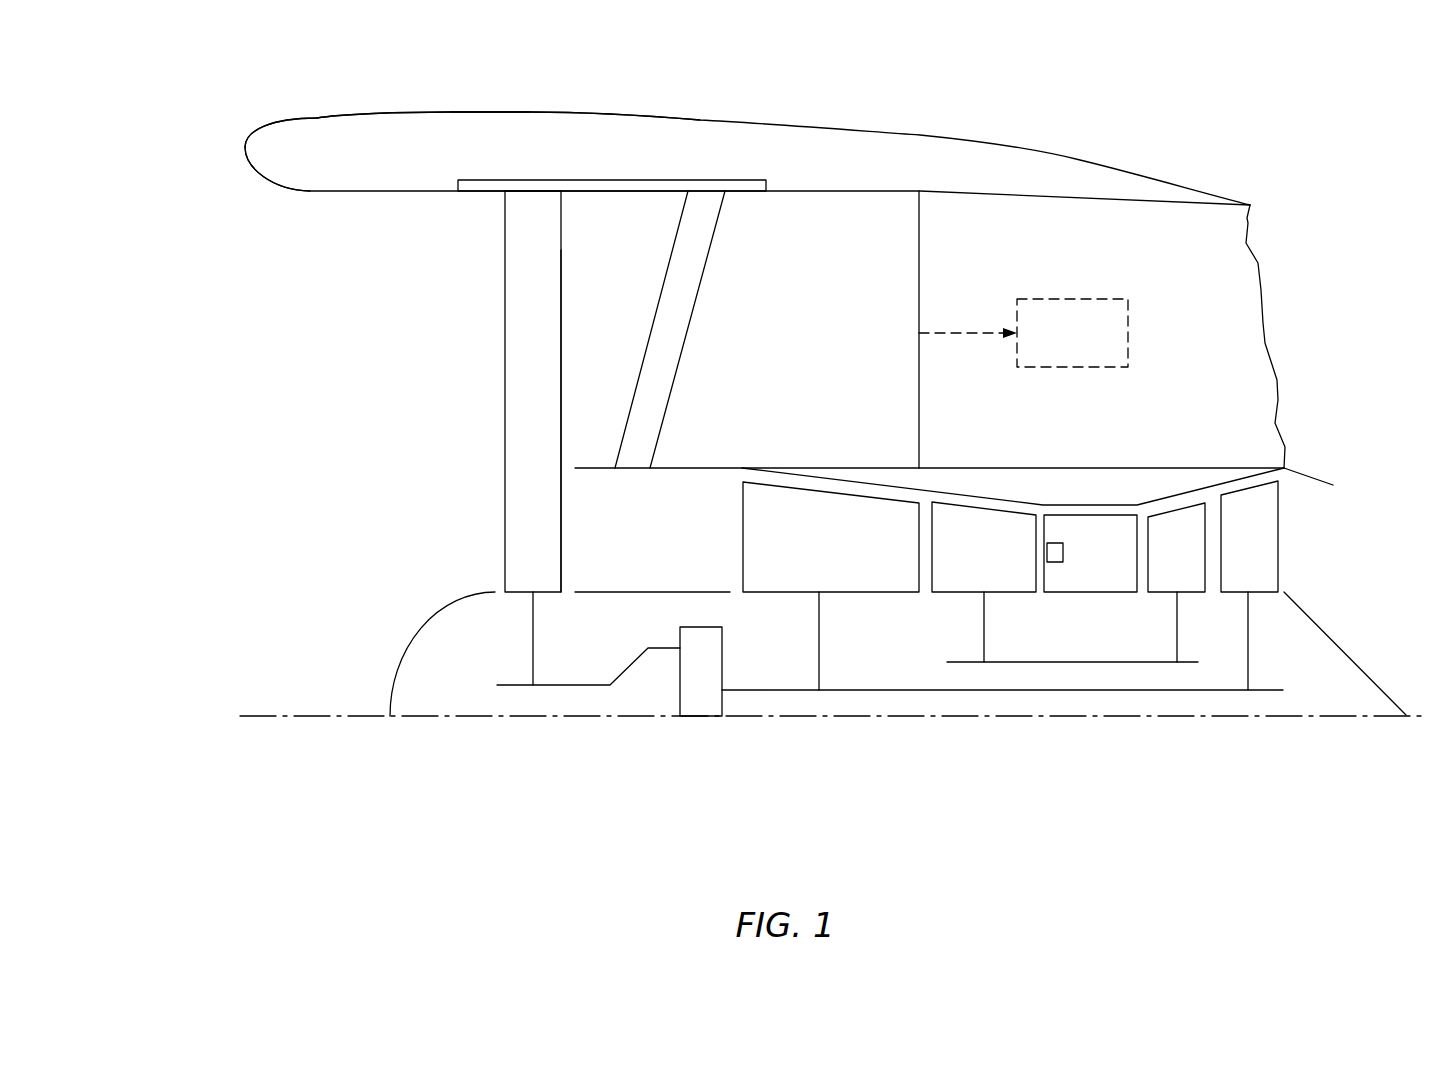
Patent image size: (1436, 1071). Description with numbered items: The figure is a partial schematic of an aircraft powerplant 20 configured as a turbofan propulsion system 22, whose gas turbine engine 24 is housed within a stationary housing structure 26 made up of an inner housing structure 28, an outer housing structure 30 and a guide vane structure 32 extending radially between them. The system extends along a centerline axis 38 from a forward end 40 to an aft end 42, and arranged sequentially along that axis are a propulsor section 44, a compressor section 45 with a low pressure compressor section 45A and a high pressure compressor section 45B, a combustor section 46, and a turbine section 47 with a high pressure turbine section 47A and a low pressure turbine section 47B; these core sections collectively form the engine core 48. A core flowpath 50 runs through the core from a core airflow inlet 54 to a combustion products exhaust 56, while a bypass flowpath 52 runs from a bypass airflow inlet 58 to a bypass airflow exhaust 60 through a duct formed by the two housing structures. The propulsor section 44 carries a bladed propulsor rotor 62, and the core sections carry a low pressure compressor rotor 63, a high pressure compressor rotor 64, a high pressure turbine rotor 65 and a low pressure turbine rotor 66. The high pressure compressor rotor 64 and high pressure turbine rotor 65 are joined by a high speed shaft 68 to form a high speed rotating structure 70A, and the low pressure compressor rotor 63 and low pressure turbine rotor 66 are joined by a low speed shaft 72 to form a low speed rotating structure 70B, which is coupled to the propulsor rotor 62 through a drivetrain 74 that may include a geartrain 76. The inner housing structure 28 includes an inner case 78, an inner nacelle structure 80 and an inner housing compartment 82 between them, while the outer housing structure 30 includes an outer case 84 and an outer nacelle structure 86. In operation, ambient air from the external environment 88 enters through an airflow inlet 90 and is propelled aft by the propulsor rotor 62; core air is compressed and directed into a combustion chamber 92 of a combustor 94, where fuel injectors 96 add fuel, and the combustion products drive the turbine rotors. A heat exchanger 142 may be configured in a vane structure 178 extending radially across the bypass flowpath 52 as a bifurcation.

The powerplant 20 is at (215, 100).
The propulsion system 22 is at (215, 100).
The gas turbine engine 24 is at (278, 261).
The housing structure 26 is at (403, 87).
The inner housing structure 28 is at (768, 450).
The outer housing structure 30 is at (460, 89).
The guide vane structure 32 is at (719, 327).
The axis 38 is at (259, 716).
The forward end 40 is at (245, 152).
The aft end 42 is at (1414, 713).
The propulsor section 44 is at (493, 773).
The compressor section 45 is at (743, 832).
The low pressure compressor section 45A is at (743, 763).
The high pressure compressor section 45B is at (932, 763).
The combustor section 46 is at (1045, 763).
The turbine section 47 is at (1148, 832).
The high pressure turbine section 47A is at (1207, 763).
The low pressure turbine section 47B is at (1222, 763).
The core 48 is at (1085, 866).
The core flowpath 50 is at (636, 569).
The bypass flowpath 52 is at (859, 328).
The airflow inlet 54 is at (573, 523).
The combustion products exhaust 56 is at (1334, 545).
The airflow inlet 58 is at (585, 318).
The airflow exhaust 60 is at (1253, 325).
The propulsor rotor 62 is at (516, 452).
The low pressure compressor rotor 63 is at (804, 569).
The high pressure compressor rotor 64 is at (971, 569).
The high pressure turbine rotor 65 is at (1164, 569).
The low pressure turbine rotor 66 is at (1236, 569).
The high speed shaft 68 is at (1007, 660).
The high speed rotating structure 70A is at (1213, 648).
The low speed rotating structure 70B is at (1305, 677).
The low speed shaft 72 is at (870, 690).
The drivetrain 74 is at (692, 746).
The geartrain 76 is at (687, 688).
The inner case 78 is at (828, 477).
The inner nacelle structure 80 is at (873, 468).
The inner housing compartment 82 is at (1159, 481).
The outer case 84 is at (467, 180).
The outer nacelle structure 86 is at (537, 112).
The environment 88 is at (210, 462).
The airflow inlet 90 is at (245, 358).
The combustion chamber 92 is at (1086, 569).
The combustor 94 is at (1090, 592).
The fuel injectors 96 is at (1056, 562).
The heat exchanger 142 is at (1055, 367).
The vane structure 178 is at (903, 270).